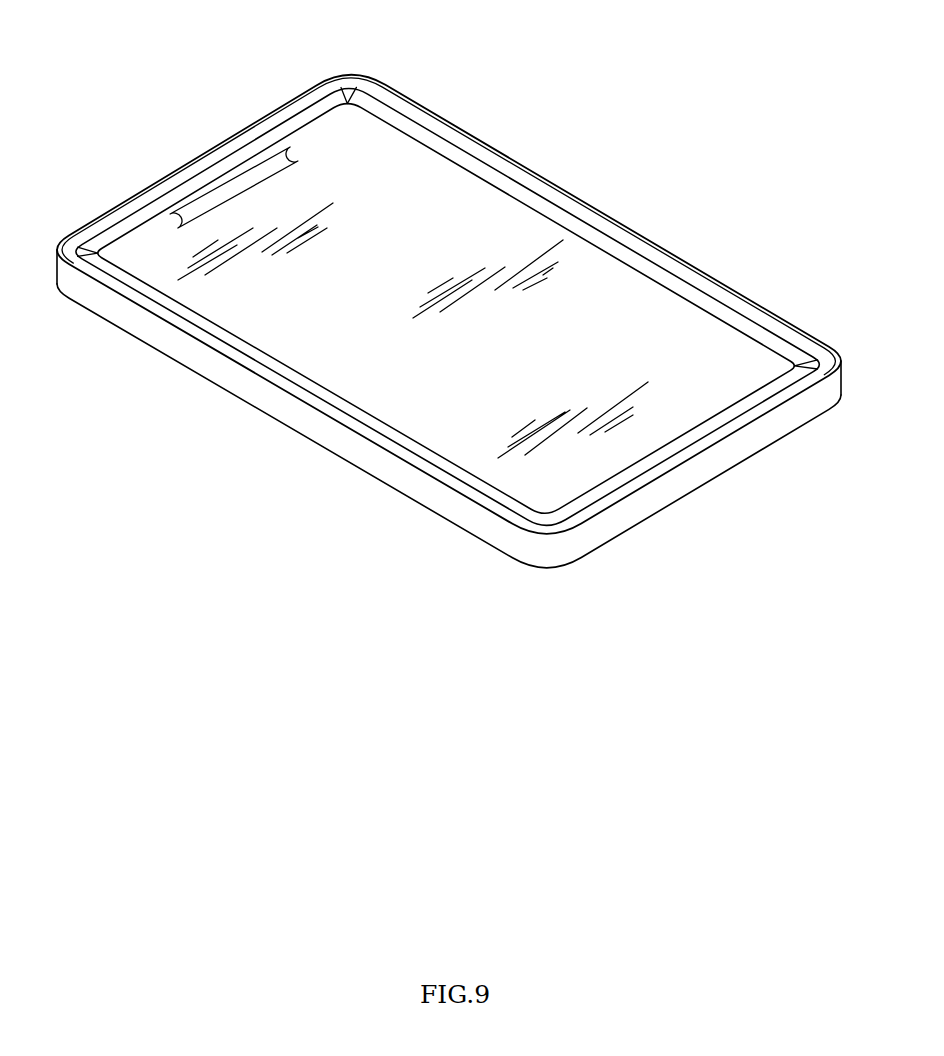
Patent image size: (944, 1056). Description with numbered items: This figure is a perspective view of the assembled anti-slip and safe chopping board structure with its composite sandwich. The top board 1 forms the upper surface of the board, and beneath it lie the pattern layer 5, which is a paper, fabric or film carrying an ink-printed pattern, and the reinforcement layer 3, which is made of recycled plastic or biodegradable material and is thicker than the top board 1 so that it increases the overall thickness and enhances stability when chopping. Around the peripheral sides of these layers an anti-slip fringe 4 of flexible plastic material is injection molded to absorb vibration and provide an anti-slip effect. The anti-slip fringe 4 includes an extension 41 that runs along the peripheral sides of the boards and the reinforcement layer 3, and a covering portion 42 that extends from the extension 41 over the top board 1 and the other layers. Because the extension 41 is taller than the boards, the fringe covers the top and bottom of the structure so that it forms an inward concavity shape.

The top board 1 is at (140, 235).
The reinforcement layer 3 is at (556, 218).
The anti-slip fringe 4 is at (193, 157).
The extension 41 is at (253, 395).
The covering portion 42 is at (327, 107).
The pattern layer 5 is at (485, 268).